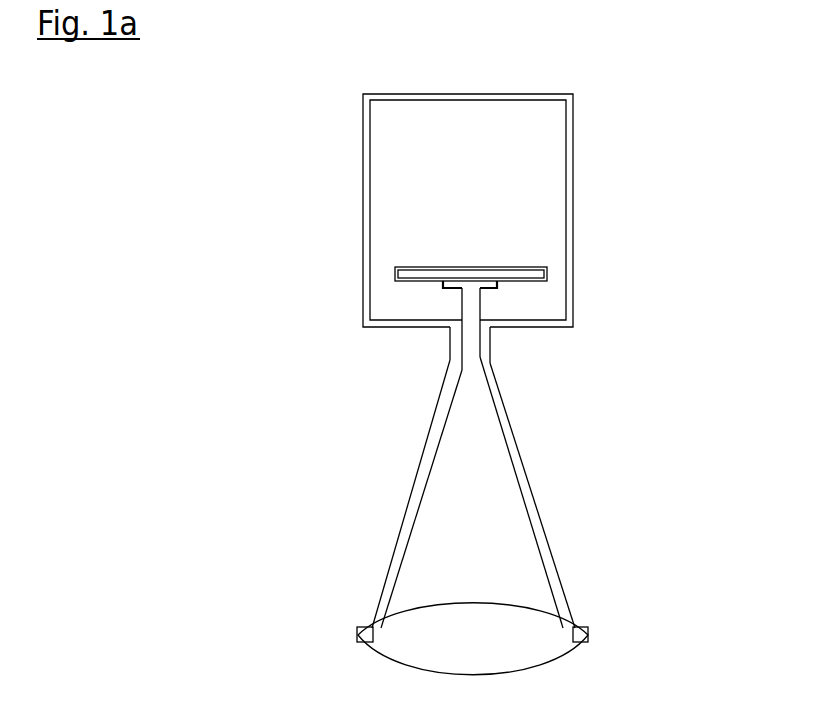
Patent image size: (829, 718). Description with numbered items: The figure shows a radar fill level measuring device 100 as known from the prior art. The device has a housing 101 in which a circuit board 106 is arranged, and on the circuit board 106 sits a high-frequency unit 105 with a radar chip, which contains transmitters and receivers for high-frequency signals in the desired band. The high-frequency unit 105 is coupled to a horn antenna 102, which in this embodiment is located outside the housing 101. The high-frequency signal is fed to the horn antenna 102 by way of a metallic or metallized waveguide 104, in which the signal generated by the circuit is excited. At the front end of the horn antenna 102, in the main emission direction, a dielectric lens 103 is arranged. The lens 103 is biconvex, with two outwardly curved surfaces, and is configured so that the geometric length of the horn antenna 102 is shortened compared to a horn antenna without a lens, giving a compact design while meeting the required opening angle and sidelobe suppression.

The radar fill level measuring device 100 is at (198, 195).
The housing 101 is at (573, 192).
The horn antenna 102 is at (398, 533).
The dielectric lens 103 is at (402, 639).
The waveguide 104 is at (484, 305).
The high-frequency unit 105 is at (458, 287).
The circuit board 106 is at (498, 272).